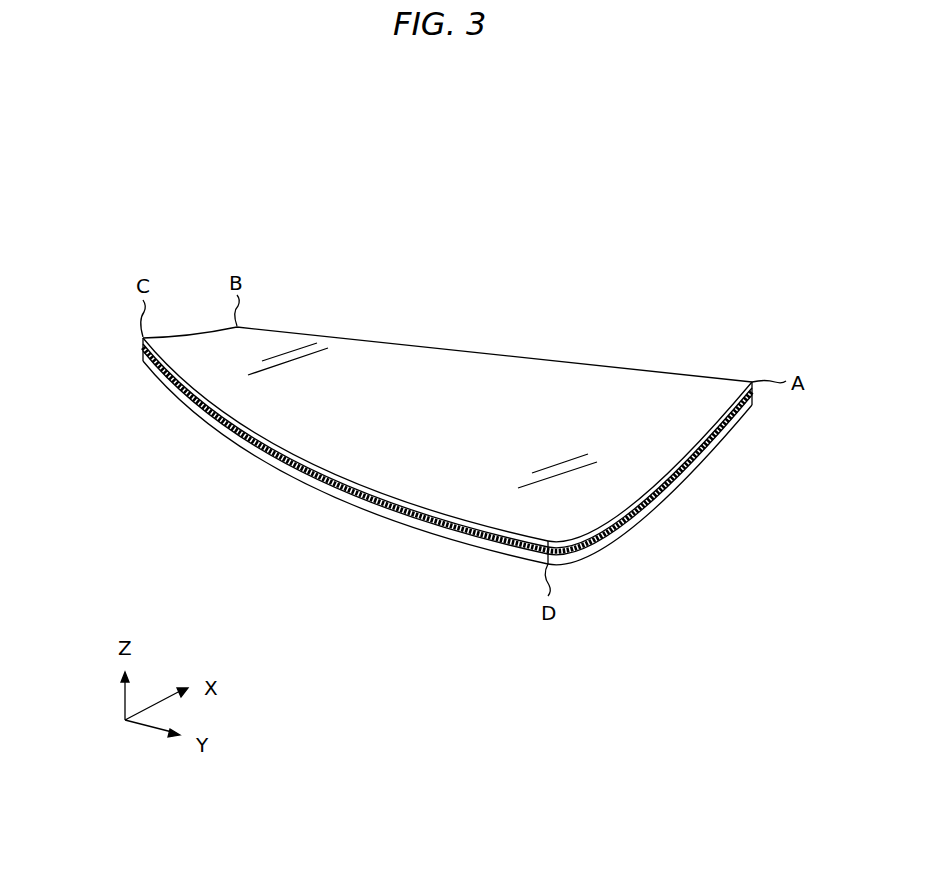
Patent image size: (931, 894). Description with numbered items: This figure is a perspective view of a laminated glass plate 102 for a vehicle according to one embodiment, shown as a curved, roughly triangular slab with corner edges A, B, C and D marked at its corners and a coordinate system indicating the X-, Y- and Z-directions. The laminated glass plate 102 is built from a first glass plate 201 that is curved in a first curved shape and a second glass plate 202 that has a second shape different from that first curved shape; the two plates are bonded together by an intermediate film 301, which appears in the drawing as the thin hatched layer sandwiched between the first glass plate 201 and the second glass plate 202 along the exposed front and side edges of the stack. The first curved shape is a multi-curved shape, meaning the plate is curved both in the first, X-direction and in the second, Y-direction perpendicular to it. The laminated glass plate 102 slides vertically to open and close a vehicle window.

The laminated glass plate for a vehicle 102 is at (467, 319).
The first glass plate 201 is at (338, 490).
The intermediate film 301 is at (286, 461).
The second glass plate 202 is at (240, 431).